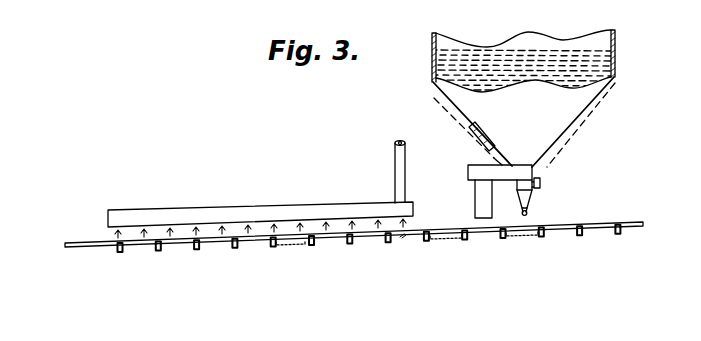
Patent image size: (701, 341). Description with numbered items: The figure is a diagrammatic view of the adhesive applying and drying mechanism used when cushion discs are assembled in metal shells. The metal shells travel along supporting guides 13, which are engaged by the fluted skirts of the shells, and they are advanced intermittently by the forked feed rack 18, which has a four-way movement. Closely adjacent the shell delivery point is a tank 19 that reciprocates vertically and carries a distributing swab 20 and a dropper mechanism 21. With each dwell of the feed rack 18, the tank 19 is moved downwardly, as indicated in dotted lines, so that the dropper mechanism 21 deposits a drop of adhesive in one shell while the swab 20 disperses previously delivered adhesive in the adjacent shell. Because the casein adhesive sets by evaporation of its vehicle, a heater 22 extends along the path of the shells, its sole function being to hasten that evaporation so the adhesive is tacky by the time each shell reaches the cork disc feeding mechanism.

The supporting guides 13 is at (86, 243).
The forked feed rack 18 is at (272, 249).
The tank 19 is at (615, 47).
The distributing swab 20 is at (476, 200).
The dropper mechanism 21 is at (530, 206).
The heater 22 is at (240, 206).